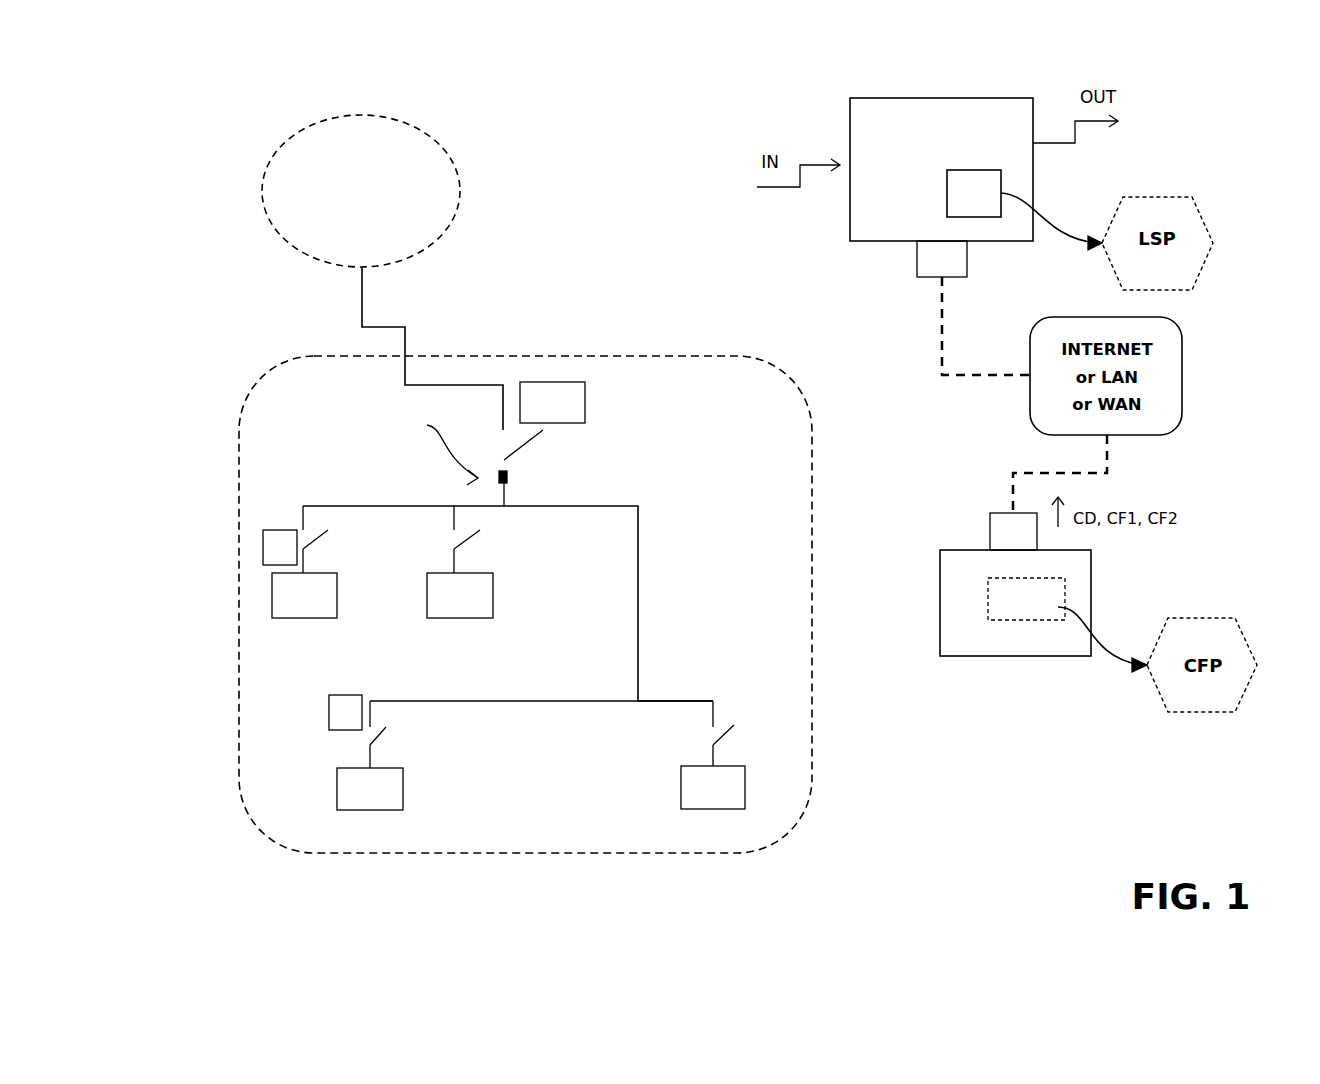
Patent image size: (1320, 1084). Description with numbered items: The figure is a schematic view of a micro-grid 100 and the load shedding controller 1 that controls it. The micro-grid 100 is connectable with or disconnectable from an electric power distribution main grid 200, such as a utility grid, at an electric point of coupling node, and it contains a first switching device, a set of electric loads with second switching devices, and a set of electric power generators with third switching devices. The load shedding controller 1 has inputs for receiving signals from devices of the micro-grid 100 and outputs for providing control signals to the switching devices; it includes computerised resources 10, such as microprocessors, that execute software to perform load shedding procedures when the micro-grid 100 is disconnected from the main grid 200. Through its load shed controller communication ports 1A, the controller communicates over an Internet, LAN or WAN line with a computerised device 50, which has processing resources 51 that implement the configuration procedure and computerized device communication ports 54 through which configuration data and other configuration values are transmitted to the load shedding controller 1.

The electric power distribution main grid 200 is at (380, 203).
The micro-grid 100 is at (240, 720).
The load shedding controller 1 is at (885, 137).
The computerised resources 10 is at (988, 206).
The load shed controller communication ports 1A is at (933, 268).
The computerized device communication ports 54 is at (1004, 544).
The computerised device 50 is at (952, 633).
The processing resources 51 is at (1026, 599).